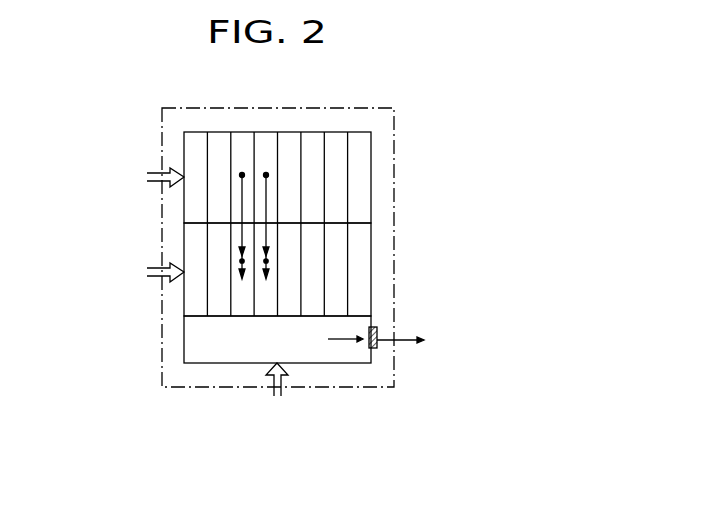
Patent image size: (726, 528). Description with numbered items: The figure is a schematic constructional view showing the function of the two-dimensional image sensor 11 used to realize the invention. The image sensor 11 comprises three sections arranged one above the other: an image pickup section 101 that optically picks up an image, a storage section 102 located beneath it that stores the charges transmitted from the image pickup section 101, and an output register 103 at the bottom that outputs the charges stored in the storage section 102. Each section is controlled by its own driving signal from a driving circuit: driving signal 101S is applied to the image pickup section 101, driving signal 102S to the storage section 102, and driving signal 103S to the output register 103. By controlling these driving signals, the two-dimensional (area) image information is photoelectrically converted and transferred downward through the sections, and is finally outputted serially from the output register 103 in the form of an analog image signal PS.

The two-dimensional image sensor 11 is at (394, 179).
The image pickup section 101 is at (184, 145).
The storage section 102 is at (184, 302).
The output register 103 is at (343, 363).
The driving signal 101S is at (138, 176).
The driving signal 102S is at (133, 271).
The driving signal 103S is at (280, 394).
The analog image signal PS is at (418, 341).